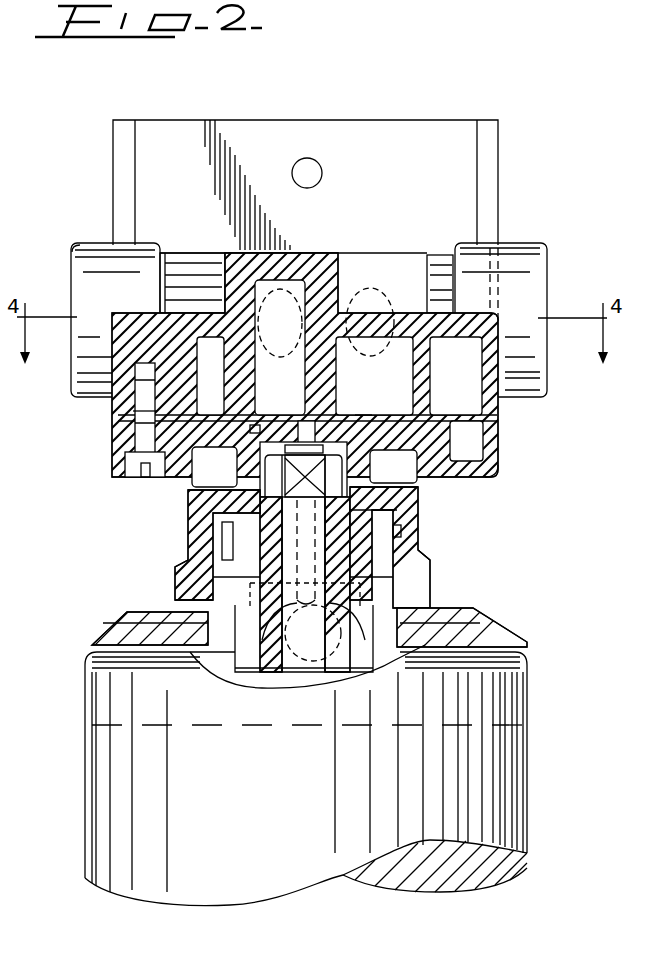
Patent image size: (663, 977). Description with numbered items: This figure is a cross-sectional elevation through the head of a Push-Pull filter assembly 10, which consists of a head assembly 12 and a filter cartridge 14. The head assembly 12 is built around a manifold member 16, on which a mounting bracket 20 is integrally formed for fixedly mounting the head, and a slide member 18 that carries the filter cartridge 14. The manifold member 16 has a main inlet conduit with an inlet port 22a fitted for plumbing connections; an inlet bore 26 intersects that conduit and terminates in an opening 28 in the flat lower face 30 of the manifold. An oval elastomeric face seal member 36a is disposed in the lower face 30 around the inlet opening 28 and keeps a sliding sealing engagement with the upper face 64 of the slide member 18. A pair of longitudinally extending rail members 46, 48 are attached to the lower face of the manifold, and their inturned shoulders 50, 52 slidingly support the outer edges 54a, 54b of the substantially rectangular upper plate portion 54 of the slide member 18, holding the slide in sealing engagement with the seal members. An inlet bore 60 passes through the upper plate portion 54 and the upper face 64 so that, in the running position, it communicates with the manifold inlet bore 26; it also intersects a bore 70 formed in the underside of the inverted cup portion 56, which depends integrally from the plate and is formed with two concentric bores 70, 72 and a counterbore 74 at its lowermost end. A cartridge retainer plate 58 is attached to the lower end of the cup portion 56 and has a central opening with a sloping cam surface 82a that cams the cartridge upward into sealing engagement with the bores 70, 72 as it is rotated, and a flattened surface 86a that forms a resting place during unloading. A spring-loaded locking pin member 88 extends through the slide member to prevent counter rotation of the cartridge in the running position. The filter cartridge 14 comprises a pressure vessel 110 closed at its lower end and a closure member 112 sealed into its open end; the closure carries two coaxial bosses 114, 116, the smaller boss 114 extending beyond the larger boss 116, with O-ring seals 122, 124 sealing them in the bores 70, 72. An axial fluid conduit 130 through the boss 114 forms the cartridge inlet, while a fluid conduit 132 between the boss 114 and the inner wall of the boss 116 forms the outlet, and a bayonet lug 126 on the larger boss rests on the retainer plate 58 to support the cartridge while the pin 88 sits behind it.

The filter assembly 10 is at (100, 443).
The head assembly 12 is at (540, 398).
The filter cartridge 14 is at (542, 832).
The manifold member 16 is at (72, 330).
The slide member 18 is at (165, 543).
The mounting bracket 20 is at (497, 213).
The inlet port 22a is at (72, 258).
The inlet bore 26 is at (280, 347).
The opening 28 is at (303, 413).
The lower face 30 is at (395, 417).
The face seal member 36a is at (233, 400).
The rail member 46 is at (125, 468).
The rail member 48 is at (490, 474).
The inturned shoulder 50 is at (214, 467).
The inturned shoulder 52 is at (393, 466).
The upper plate portion 54 is at (437, 415).
The outer edge 54a is at (135, 411).
The outer edge 54b is at (493, 443).
The inverted cup portion 56 is at (172, 597).
The cartridge retainer plate 58 is at (487, 625).
The inlet bore 60 is at (257, 433).
The upper face 64 is at (337, 417).
The bore 70 is at (362, 417).
The bore 72 is at (428, 567).
The counterbore 74 is at (127, 615).
The cam surface 82a is at (357, 680).
The flattened surface 86a is at (305, 683).
The locking pin member 88 is at (277, 687).
The pressure vessel 110 is at (527, 693).
The closure member 112 is at (233, 655).
The boss 114 is at (210, 497).
The boss 116 is at (176, 563).
The O-ring seal 122 is at (405, 492).
The O-ring seal 124 is at (403, 535).
The bayonet lug 126 is at (295, 593).
The fluid conduit 130 is at (397, 510).
The fluid conduit 132 is at (373, 587).